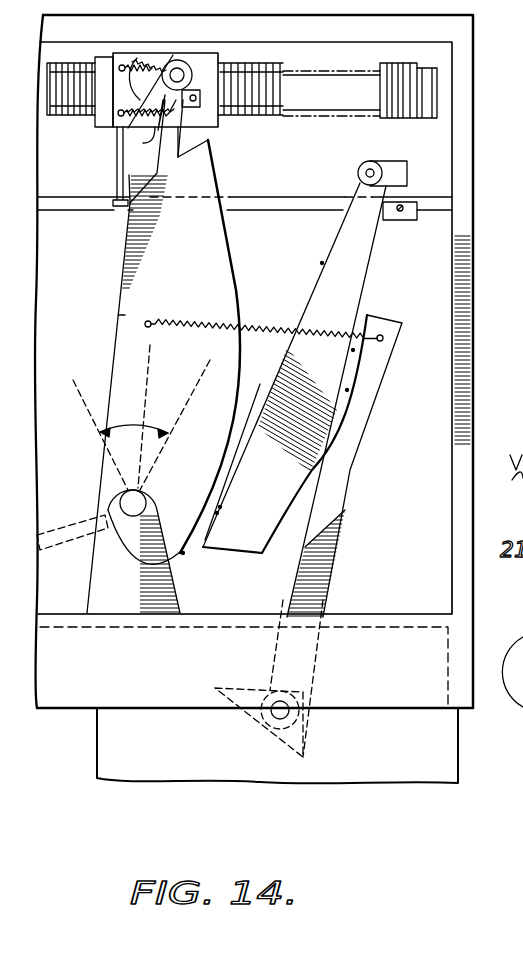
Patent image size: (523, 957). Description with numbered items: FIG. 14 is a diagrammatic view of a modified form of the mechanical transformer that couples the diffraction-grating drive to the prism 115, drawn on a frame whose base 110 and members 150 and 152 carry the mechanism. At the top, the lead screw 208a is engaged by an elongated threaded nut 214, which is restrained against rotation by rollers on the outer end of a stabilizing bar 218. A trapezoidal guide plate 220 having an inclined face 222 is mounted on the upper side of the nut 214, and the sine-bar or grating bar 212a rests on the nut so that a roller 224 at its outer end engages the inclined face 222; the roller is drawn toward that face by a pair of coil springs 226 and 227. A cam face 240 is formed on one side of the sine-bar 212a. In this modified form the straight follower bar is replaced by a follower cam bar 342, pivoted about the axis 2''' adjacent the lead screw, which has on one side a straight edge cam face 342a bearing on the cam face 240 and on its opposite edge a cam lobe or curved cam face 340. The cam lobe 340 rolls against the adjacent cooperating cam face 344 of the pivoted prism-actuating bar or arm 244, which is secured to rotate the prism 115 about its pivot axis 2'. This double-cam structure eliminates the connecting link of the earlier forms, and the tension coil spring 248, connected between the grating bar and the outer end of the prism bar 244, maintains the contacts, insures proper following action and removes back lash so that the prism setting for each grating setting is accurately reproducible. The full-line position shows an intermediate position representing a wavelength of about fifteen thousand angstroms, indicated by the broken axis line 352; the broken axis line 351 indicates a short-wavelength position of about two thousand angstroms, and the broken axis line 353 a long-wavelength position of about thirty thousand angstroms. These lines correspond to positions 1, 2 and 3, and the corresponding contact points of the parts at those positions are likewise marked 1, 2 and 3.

The base 110 is at (97, 745).
The prism 115 is at (280, 735).
The frame bottom member 150 is at (240, 607).
The frame side member 152 is at (455, 573).
The lead screw 208a is at (410, 70).
The sine-bar 212a is at (125, 315).
The elongated threaded nut 214 is at (215, 128).
The stabilizing bar 218 is at (117, 177).
The trapezoidal guide plate 220 is at (137, 58).
The inclined face 222 is at (115, 65).
The roller 224 is at (188, 65).
The coil spring 226 is at (140, 77).
The coil spring 227 is at (143, 145).
The cam face 240 is at (283, 245).
The prism bar 244 is at (357, 457).
The tension coil spring 248 is at (212, 327).
The cam lobe 340 is at (302, 510).
The follower cam bar 342 is at (362, 253).
The straight edge cam face 342a is at (263, 384).
The cooperating cam face 344 is at (308, 567).
The broken axis line 351 is at (197, 383).
The broken axis line 352 is at (147, 357).
The broken axis line 353 is at (90, 417).
The contact point at position 1 is at (227, 207).
The contact point at position 2 is at (299, 446).
The contact point at position 3 is at (353, 350).
The pivot axis Z' 2' is at (314, 678).
The pivot axis Z''' 2''' is at (382, 157).